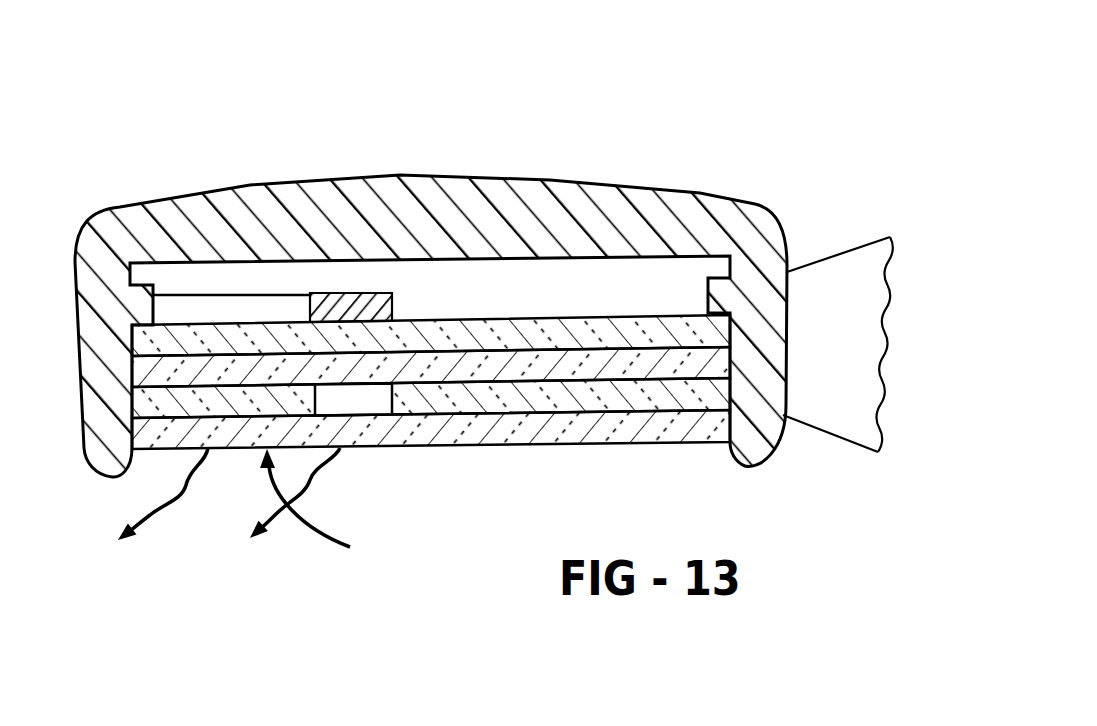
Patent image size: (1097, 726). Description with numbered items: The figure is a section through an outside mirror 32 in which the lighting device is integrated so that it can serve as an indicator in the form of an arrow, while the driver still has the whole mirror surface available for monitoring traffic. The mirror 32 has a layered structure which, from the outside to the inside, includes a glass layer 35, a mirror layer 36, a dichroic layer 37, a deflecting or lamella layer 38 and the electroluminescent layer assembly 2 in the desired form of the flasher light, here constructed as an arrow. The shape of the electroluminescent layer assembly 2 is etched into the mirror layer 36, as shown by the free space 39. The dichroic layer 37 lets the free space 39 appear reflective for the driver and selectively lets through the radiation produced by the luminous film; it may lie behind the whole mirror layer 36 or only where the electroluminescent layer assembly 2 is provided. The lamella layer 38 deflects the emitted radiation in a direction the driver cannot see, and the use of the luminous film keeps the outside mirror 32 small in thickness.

The outside mirror 32 is at (775, 170).
The electroluminescent layer assembly 2 is at (377, 292).
The lamella layer 38 is at (552, 327).
The dichroic layer 37 is at (648, 368).
The mirror layer 36 is at (487, 406).
The free space 39 is at (390, 394).
The glass layer 35 is at (497, 435).